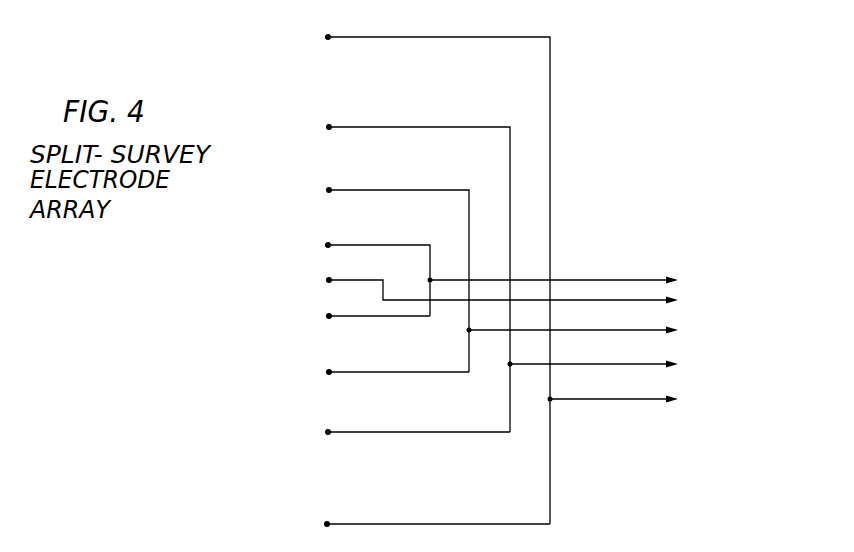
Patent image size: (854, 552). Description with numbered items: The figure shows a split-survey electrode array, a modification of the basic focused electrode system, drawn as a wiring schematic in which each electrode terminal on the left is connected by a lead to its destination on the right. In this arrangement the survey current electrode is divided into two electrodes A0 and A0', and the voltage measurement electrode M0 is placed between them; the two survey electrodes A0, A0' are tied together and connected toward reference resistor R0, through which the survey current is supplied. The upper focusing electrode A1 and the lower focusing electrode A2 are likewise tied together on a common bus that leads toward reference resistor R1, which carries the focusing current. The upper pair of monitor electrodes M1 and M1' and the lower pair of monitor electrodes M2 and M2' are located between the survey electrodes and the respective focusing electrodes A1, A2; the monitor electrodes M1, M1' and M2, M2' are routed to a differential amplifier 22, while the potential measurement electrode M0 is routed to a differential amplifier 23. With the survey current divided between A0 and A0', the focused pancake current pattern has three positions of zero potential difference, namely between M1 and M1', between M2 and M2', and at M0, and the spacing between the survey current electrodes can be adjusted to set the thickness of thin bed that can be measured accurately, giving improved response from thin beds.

The differential amplifier 22 is at (618, 349).
The differential amplifier 23 is at (717, 301).
The upper focusing electrode A1 is at (419, 274).
The lower focusing electrode A2 is at (414, 525).
The survey current electrode A0 is at (354, 317).
The survey current electrode A0' is at (354, 275).
The potential measurement electrode M0 is at (474, 285).
The monitor electrode M1 is at (374, 274).
The monitor electrode M1' is at (395, 273).
The monitor electrode M2 is at (374, 372).
The monitor electrode M2' is at (394, 432).
The reference resistor R0 is at (596, 275).
The reference resistor R1 is at (655, 399).